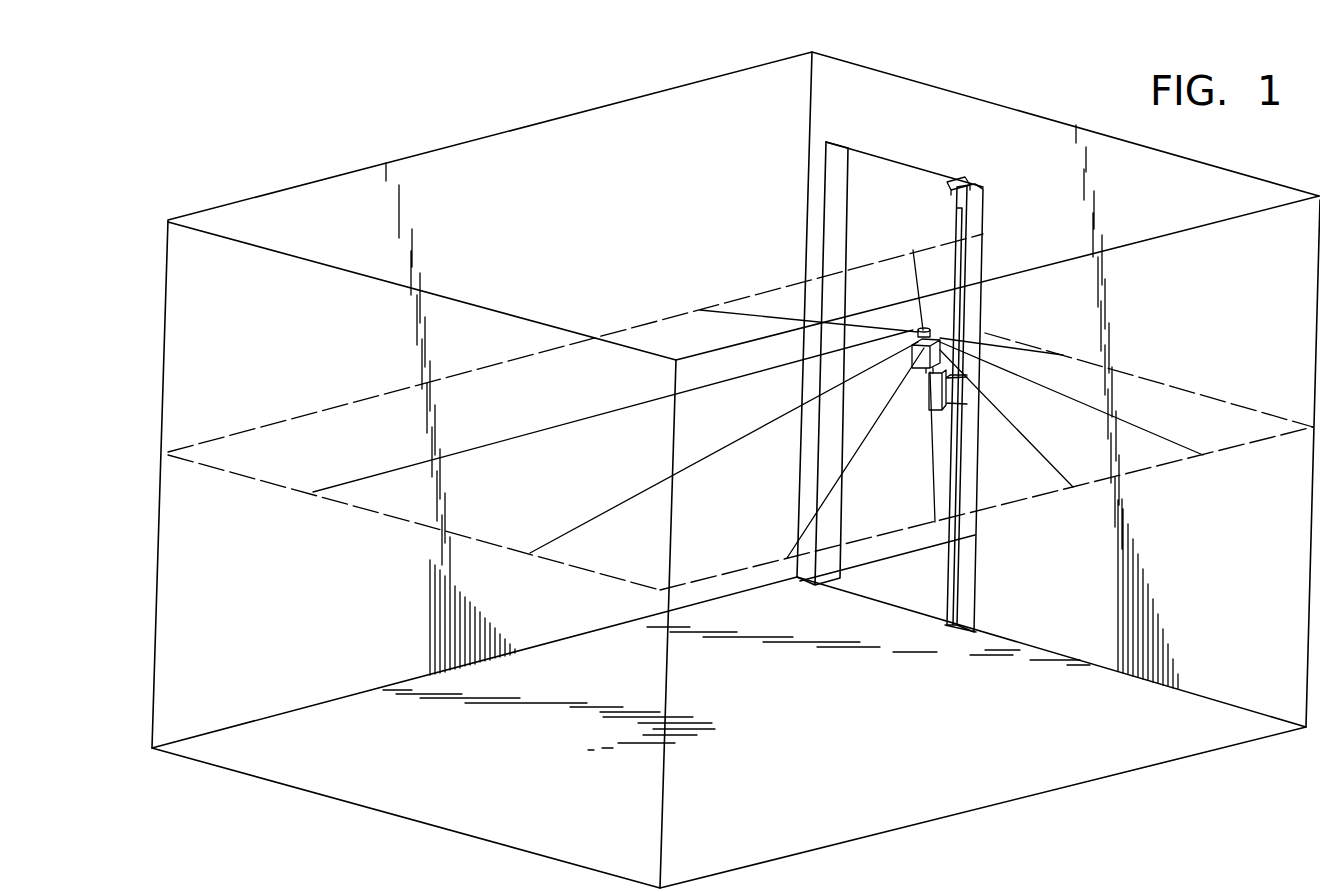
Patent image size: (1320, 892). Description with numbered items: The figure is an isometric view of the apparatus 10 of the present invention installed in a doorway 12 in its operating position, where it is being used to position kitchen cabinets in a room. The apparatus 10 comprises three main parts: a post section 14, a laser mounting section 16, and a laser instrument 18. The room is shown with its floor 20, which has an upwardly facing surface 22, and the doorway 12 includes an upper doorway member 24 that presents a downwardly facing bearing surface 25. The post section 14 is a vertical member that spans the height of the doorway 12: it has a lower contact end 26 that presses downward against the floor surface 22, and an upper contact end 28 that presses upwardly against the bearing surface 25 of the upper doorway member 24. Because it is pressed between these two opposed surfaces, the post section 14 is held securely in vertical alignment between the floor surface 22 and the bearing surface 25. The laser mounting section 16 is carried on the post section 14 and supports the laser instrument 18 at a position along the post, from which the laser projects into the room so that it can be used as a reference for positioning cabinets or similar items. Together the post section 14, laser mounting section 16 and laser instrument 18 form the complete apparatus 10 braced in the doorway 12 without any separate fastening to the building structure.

The apparatus 10 is at (946, 388).
The doorway 12 is at (833, 212).
The post section 14 is at (962, 265).
The laser mounting section 16 is at (960, 392).
The laser instrument 18 is at (937, 335).
The floor 20 is at (1125, 752).
The upwardly facing surface 22 is at (793, 722).
The upper doorway member 24 is at (903, 165).
The downwardly facing bearing surface 25 is at (865, 158).
The lower contact end 26 is at (950, 628).
The upper contact end 28 is at (963, 180).